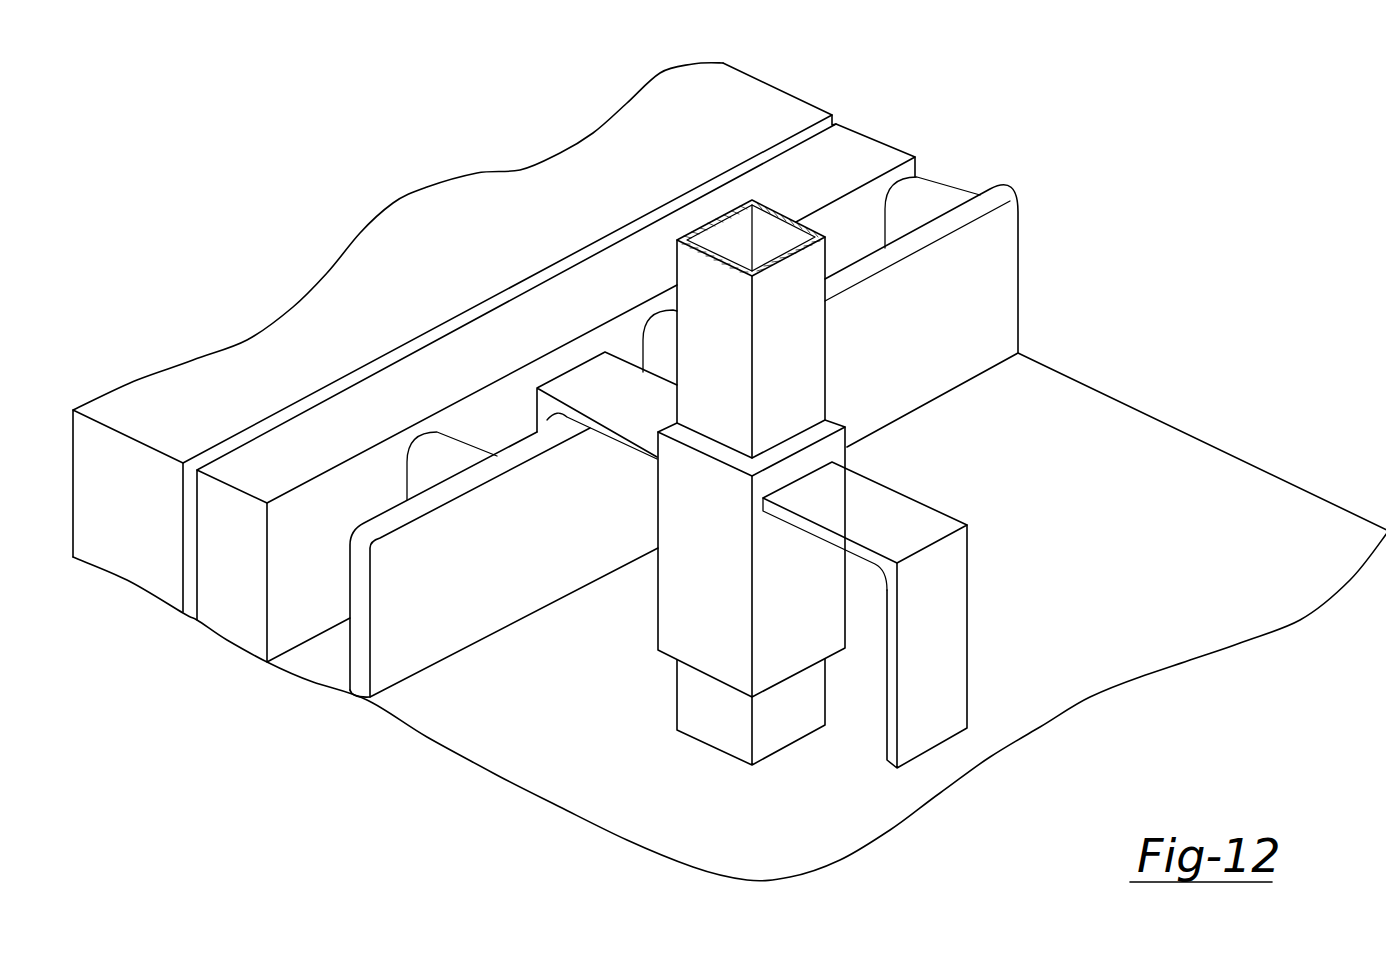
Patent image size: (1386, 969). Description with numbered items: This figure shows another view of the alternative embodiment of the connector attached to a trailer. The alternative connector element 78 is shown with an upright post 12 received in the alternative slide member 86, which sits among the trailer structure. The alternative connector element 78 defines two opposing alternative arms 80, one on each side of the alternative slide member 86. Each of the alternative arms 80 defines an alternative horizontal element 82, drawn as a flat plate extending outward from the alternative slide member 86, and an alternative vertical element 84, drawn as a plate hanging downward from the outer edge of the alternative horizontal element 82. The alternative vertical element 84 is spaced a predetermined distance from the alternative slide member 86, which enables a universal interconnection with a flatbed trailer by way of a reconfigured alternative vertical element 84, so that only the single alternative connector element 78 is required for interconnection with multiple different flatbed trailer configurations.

The post 12 is at (817, 333).
The alternative connector element 78 is at (898, 453).
The alternative arms 80 is at (698, 534).
The alternative horizontal element 82 is at (875, 523).
The alternative vertical element 84 is at (942, 622).
The alternative slide member 86 is at (719, 579).